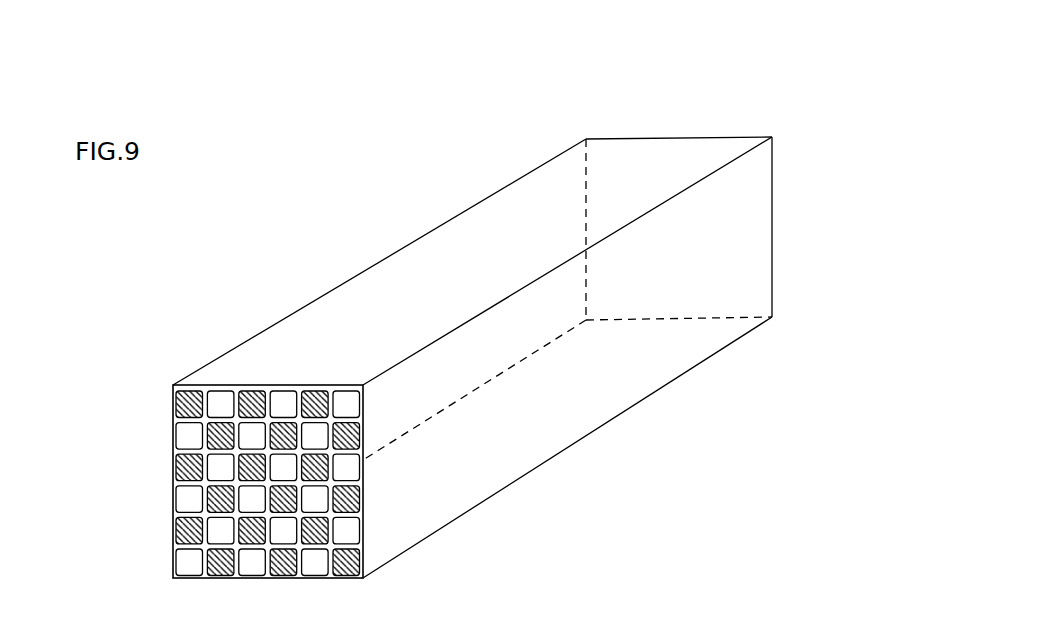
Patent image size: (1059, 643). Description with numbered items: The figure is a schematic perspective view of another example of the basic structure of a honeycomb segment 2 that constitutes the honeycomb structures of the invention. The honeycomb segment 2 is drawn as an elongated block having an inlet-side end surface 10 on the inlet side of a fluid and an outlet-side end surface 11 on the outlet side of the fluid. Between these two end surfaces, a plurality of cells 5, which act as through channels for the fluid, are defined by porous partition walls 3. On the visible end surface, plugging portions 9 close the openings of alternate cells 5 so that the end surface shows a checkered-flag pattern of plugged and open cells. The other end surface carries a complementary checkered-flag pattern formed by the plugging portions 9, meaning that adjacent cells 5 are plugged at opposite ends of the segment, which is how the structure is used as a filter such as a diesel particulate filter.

The honeycomb segment 2 is at (306, 293).
The porous partition walls 3 is at (180, 502).
The cells 5 is at (180, 435).
The plugging portions 9 is at (178, 532).
The inlet-side end surface 10 is at (317, 497).
The outlet-side end surface 11 is at (730, 247).